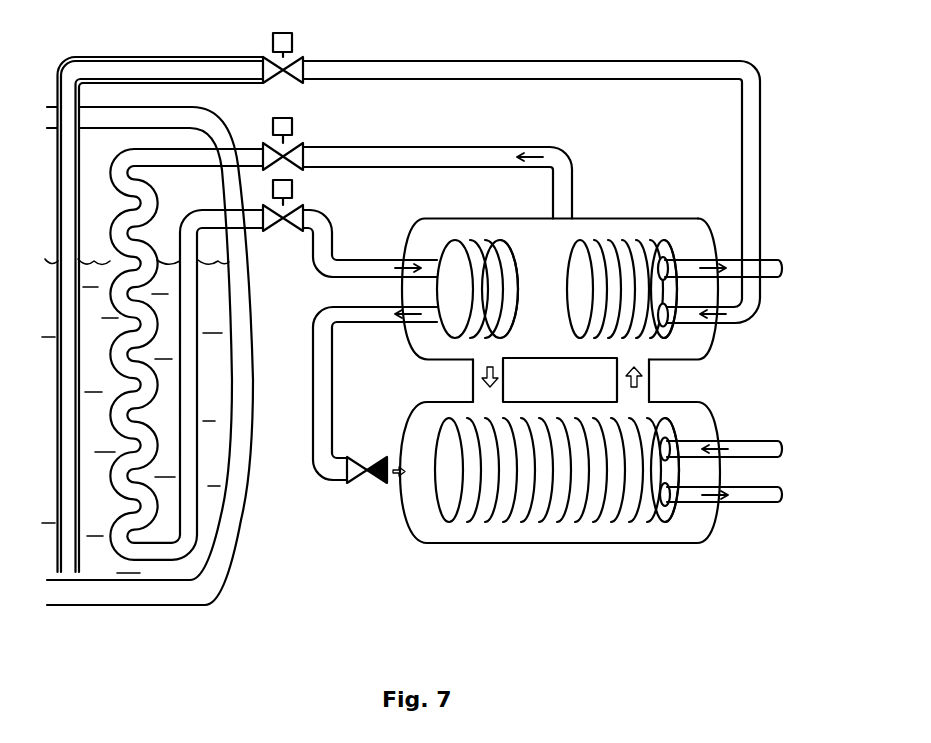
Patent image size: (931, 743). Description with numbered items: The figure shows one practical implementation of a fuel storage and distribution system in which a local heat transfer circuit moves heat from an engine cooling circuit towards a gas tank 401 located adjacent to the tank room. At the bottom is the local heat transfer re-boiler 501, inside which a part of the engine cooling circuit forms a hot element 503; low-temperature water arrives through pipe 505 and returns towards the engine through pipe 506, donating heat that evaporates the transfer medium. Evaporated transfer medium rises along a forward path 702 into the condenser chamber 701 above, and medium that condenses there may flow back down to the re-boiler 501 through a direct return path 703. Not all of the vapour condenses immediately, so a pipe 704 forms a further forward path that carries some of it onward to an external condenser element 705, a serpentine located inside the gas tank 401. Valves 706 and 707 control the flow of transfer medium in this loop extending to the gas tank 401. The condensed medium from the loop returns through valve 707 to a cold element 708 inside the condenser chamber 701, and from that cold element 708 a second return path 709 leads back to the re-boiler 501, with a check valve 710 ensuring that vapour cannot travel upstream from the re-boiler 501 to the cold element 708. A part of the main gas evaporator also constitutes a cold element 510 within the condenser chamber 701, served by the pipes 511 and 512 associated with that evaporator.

The gas tank 401 is at (228, 582).
The external condenser element 705 is at (160, 206).
The valve 706 is at (303, 152).
The valve 707 is at (285, 235).
The pipe 511 is at (497, 83).
The pipe 704 is at (568, 150).
The cold element 510 is at (632, 240).
The pipe 512 is at (768, 257).
The condenser chamber 701 is at (410, 340).
The cold element 708 is at (448, 336).
The direct return path 703 is at (506, 388).
The forward path 702 is at (652, 385).
The second return path 709 is at (313, 470).
The check valve 710 is at (365, 483).
The local heat transfer re-boiler 501 is at (407, 520).
The hot element 503 is at (455, 515).
The pipe 505 is at (752, 441).
The pipe 506 is at (752, 503).